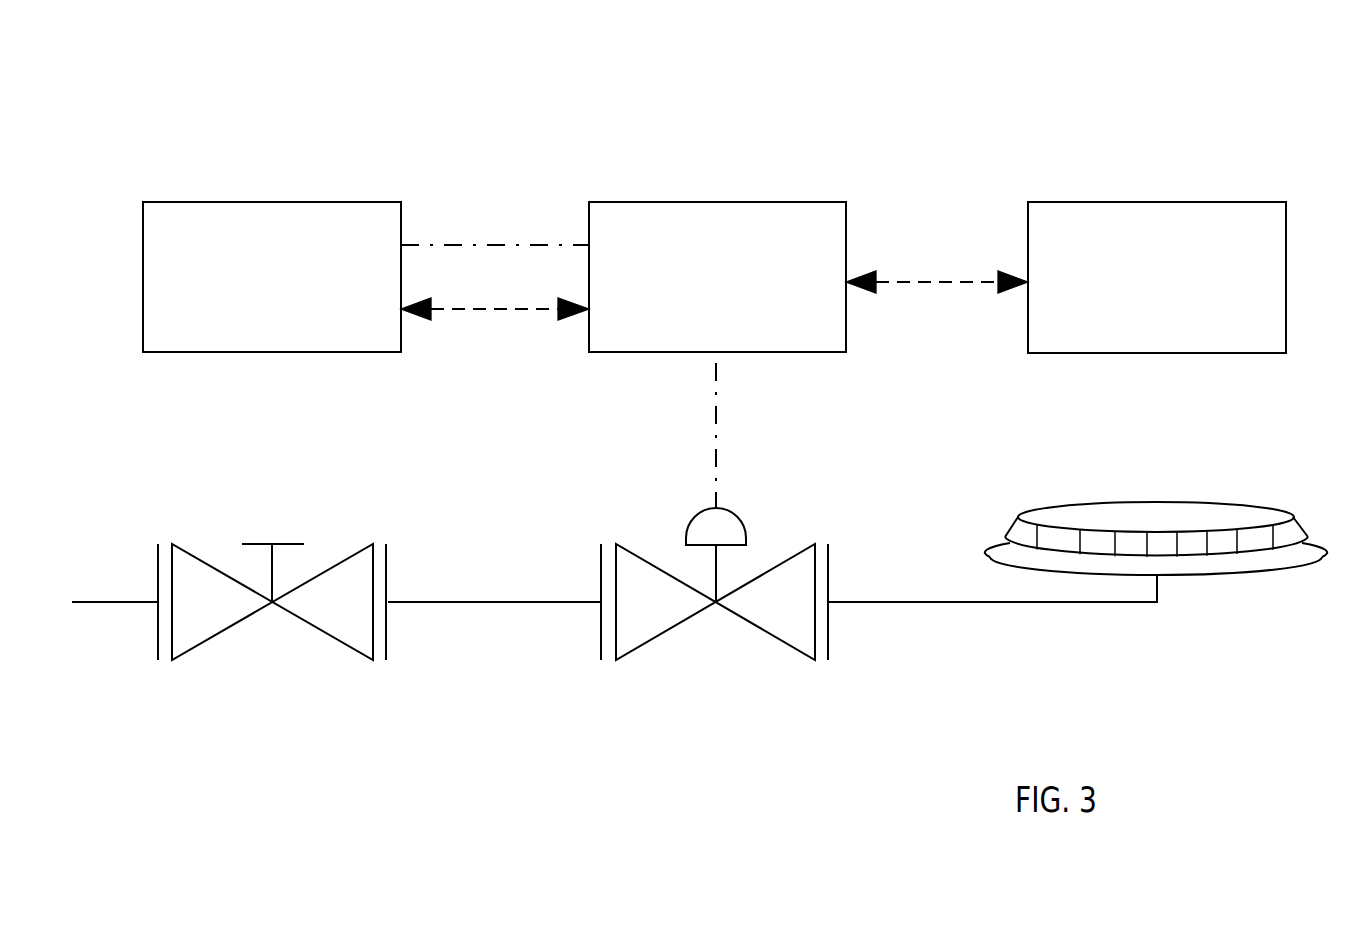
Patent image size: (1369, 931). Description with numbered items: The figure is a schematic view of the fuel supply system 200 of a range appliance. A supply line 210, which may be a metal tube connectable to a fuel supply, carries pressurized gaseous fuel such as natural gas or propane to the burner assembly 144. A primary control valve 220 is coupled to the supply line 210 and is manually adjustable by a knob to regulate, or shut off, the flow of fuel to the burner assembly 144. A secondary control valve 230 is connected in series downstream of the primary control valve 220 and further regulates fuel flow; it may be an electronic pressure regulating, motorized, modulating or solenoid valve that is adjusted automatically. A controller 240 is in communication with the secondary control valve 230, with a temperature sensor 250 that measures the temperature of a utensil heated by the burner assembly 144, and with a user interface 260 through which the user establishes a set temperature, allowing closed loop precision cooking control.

The fuel supply system 200 is at (1113, 122).
The user interface 260 is at (272, 277).
The controller 240 is at (717, 277).
The temperature sensor 250 is at (1157, 277).
The supply line 210 is at (98, 595).
The primary control valve 220 is at (230, 627).
The secondary control valve 230 is at (674, 627).
The burner assembly 144 is at (1167, 520).